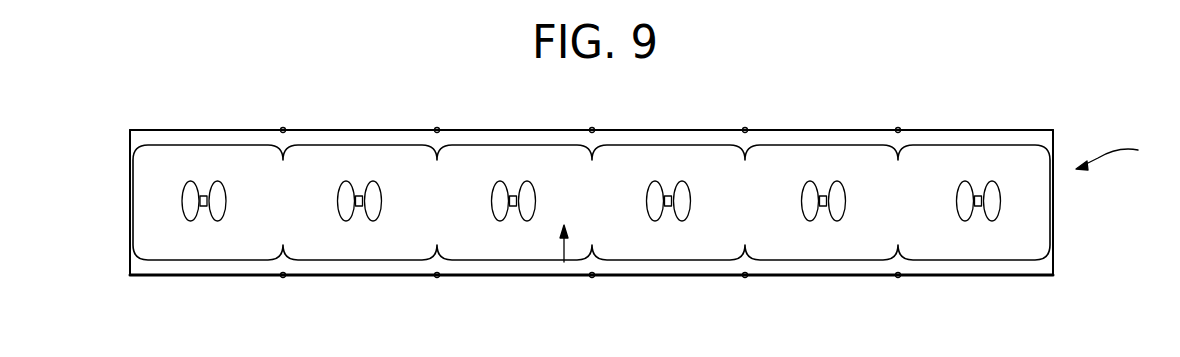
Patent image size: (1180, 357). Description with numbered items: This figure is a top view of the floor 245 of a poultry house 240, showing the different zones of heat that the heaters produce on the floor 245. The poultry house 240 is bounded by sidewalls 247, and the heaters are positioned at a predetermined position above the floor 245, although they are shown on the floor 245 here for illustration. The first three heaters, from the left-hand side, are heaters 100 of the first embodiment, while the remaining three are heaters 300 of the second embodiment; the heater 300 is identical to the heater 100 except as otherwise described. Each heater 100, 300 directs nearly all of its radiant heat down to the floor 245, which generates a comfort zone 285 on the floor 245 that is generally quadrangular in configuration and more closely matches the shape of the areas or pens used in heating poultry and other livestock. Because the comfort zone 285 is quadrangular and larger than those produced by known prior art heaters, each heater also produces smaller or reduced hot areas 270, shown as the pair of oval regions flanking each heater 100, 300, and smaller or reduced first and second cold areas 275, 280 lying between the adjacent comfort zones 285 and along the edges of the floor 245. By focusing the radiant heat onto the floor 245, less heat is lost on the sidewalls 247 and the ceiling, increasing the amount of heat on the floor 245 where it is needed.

The poultry house 240 is at (1127, 151).
The floor 245 is at (564, 262).
The sidewalls 247 is at (130, 218).
The hot areas 270 is at (188, 181).
The first cold areas 275 is at (190, 140).
The second cold areas 280 is at (130, 130).
The comfort zone 285 is at (357, 162).
The heater 100 is at (203, 207).
The heater 300 is at (668, 207).